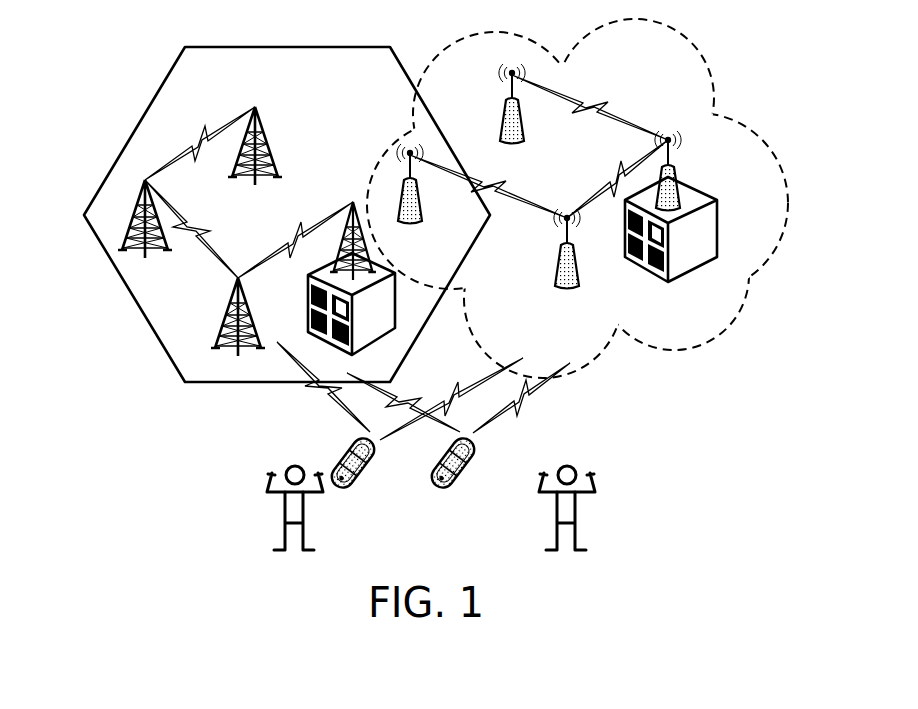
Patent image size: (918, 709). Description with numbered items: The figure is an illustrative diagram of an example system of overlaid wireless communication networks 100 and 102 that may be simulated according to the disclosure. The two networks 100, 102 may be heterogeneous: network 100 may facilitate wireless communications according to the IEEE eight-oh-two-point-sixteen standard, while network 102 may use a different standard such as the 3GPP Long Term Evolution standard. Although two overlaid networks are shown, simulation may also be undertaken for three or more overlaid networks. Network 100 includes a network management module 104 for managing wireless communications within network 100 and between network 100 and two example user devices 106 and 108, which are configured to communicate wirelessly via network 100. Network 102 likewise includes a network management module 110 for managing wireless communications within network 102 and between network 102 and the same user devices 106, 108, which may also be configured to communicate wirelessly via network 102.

The wireless communication network 100 is at (203, 317).
The wireless communication network 102 is at (596, 162).
The network management module 104 is at (397, 305).
The user device 106 is at (371, 472).
The user device 108 is at (471, 472).
The network management module 110 is at (672, 279).